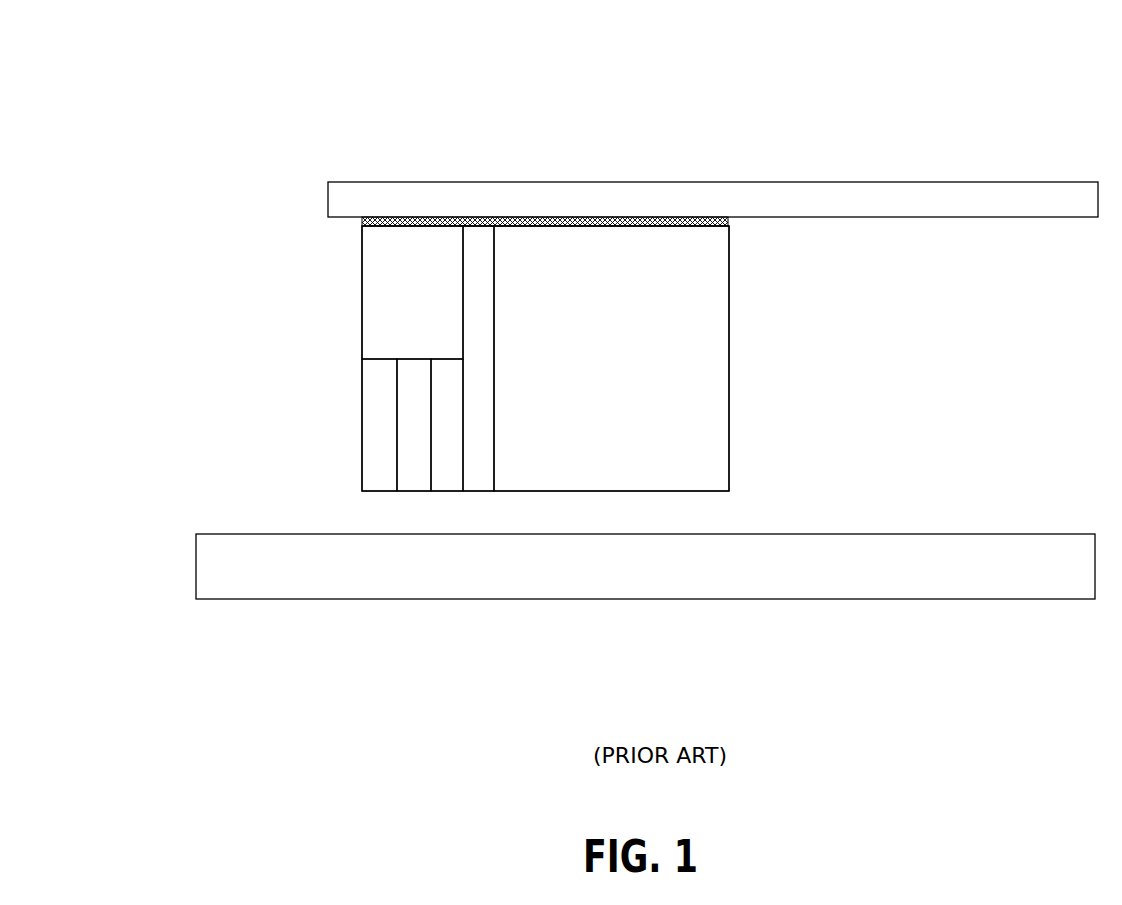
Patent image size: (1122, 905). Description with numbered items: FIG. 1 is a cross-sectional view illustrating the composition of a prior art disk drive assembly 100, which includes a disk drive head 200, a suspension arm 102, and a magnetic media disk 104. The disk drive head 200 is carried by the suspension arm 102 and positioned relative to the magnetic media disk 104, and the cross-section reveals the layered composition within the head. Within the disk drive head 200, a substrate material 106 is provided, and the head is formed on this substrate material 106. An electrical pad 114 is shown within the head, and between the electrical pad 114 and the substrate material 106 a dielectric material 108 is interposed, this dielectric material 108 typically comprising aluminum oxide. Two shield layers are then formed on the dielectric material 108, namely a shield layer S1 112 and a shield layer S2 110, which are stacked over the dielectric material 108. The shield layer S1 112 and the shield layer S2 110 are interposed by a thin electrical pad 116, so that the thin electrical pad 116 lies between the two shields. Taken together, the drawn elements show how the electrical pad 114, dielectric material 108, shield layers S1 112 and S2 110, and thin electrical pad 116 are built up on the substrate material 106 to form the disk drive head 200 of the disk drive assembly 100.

The disk drive assembly 100 is at (152, 97).
The suspension arm 102 is at (565, 200).
The magnetic media disk 104 is at (367, 570).
The substrate material 106 is at (642, 400).
The dielectric material 108 is at (478, 250).
The shield layer S2 110 is at (379, 383).
The shield layer S1 112 is at (447, 465).
The electrical pad 114 is at (378, 246).
The thin electrical pad 116 is at (413, 458).
The disk drive head 200 is at (729, 277).